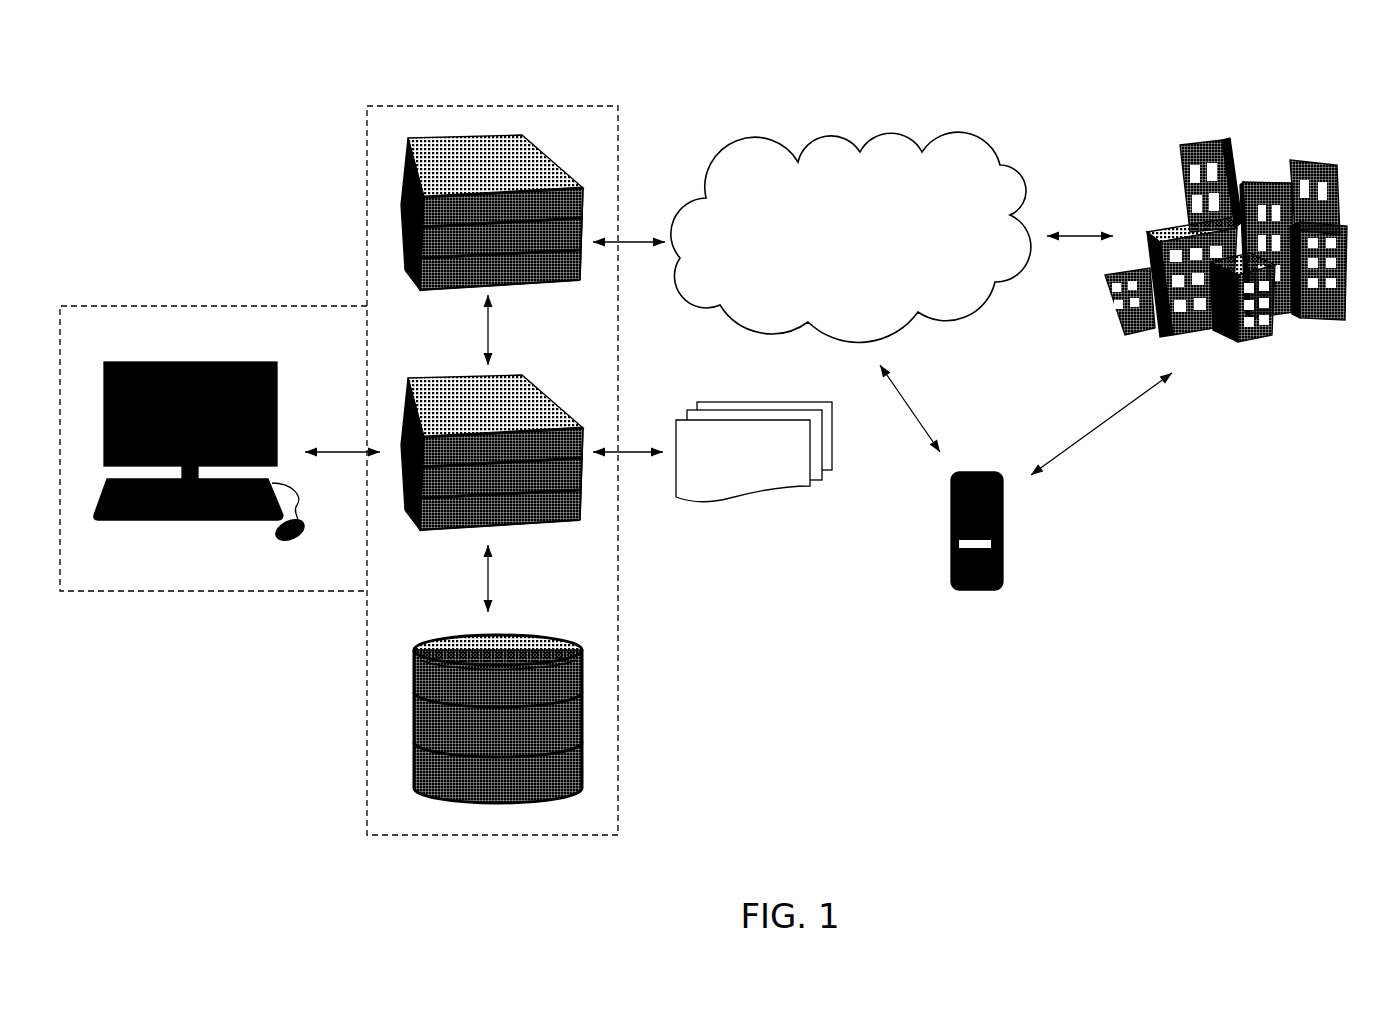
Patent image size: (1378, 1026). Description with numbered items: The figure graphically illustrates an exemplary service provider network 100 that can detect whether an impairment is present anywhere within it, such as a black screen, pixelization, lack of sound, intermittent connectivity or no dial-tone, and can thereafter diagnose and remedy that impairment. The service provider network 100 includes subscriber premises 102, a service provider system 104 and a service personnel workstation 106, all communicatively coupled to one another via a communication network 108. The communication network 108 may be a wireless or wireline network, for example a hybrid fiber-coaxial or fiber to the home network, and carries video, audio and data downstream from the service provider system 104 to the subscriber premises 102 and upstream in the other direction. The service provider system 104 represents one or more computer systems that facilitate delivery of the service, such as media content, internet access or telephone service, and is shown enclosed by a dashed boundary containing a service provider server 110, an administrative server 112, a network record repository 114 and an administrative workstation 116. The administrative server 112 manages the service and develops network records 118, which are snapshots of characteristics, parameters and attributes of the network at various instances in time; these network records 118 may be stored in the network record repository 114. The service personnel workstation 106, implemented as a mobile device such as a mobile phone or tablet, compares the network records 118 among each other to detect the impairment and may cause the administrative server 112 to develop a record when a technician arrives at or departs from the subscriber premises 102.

The service provider network 100 is at (207, 96).
The subscriber premises 102 is at (1263, 138).
The service provider system 104 is at (617, 106).
The service personnel workstation 106 is at (936, 528).
The communication network 108 is at (882, 131).
The service provider server 110 is at (492, 212).
The administrative server 112 is at (492, 452).
The network record repository 114 is at (584, 712).
The administrative workstation 116 is at (201, 453).
The network records 118 is at (754, 452).